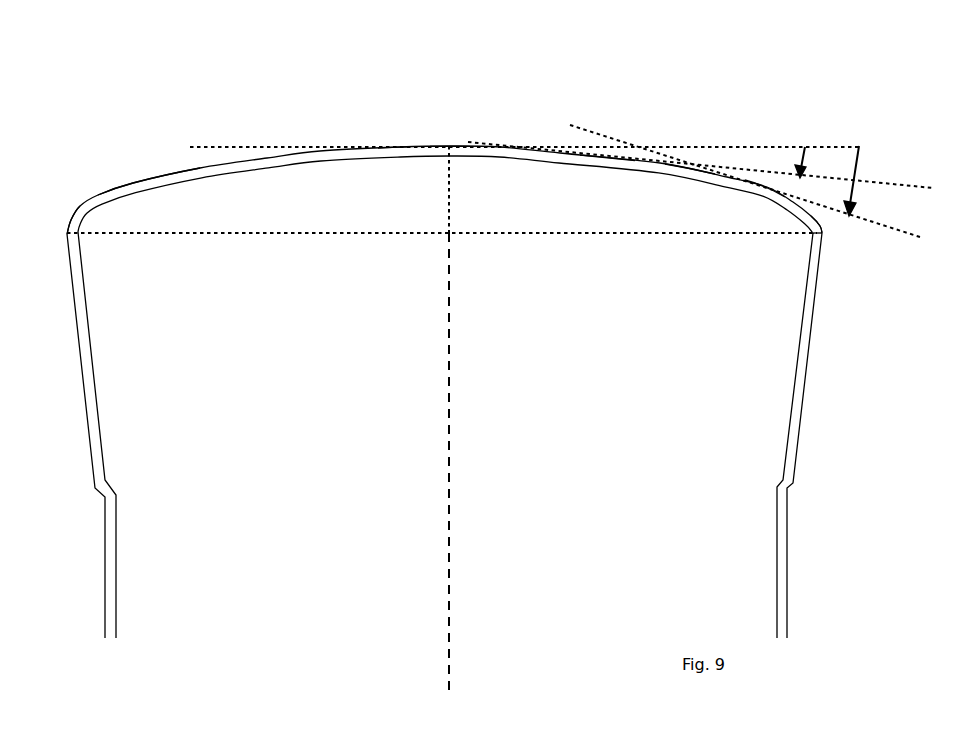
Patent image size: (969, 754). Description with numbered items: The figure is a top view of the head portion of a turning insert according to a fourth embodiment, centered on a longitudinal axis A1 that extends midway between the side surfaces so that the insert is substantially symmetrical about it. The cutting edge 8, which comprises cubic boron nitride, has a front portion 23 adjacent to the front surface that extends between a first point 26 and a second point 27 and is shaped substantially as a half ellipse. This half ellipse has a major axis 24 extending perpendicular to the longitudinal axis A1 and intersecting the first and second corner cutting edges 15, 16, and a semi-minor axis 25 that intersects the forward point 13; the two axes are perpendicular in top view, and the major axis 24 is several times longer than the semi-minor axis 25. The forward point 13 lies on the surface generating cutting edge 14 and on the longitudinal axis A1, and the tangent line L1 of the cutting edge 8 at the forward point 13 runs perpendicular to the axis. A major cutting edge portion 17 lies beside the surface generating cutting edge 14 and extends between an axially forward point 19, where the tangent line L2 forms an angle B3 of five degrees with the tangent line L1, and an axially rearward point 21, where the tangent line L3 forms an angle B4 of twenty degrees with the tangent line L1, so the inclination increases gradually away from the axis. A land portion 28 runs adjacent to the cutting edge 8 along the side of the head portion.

The cutting edge 8 is at (262, 158).
The forward point 13 is at (449, 146).
The surface generating cutting edge 14 is at (402, 147).
The first corner cutting edge 15 is at (823, 223).
The second corner cutting edge 16 is at (70, 222).
The first major cutting edge portion 17 is at (690, 165).
The axially forward point 19 is at (607, 155).
The axially rearward point 21 is at (767, 185).
The front portion 23 is at (132, 185).
The major axis 24 is at (335, 234).
The semi-minor axis 25 is at (448, 183).
The first point 26 is at (826, 232).
The second point 27 is at (67, 233).
The land portion 28 is at (800, 382).
The longitudinal axis A1 is at (442, 479).
The tangent line L1 is at (502, 139).
The tangent line L2 is at (698, 144).
The tangent line L3 is at (729, 167).
The angle B3 is at (819, 162).
The angle B4 is at (866, 181).